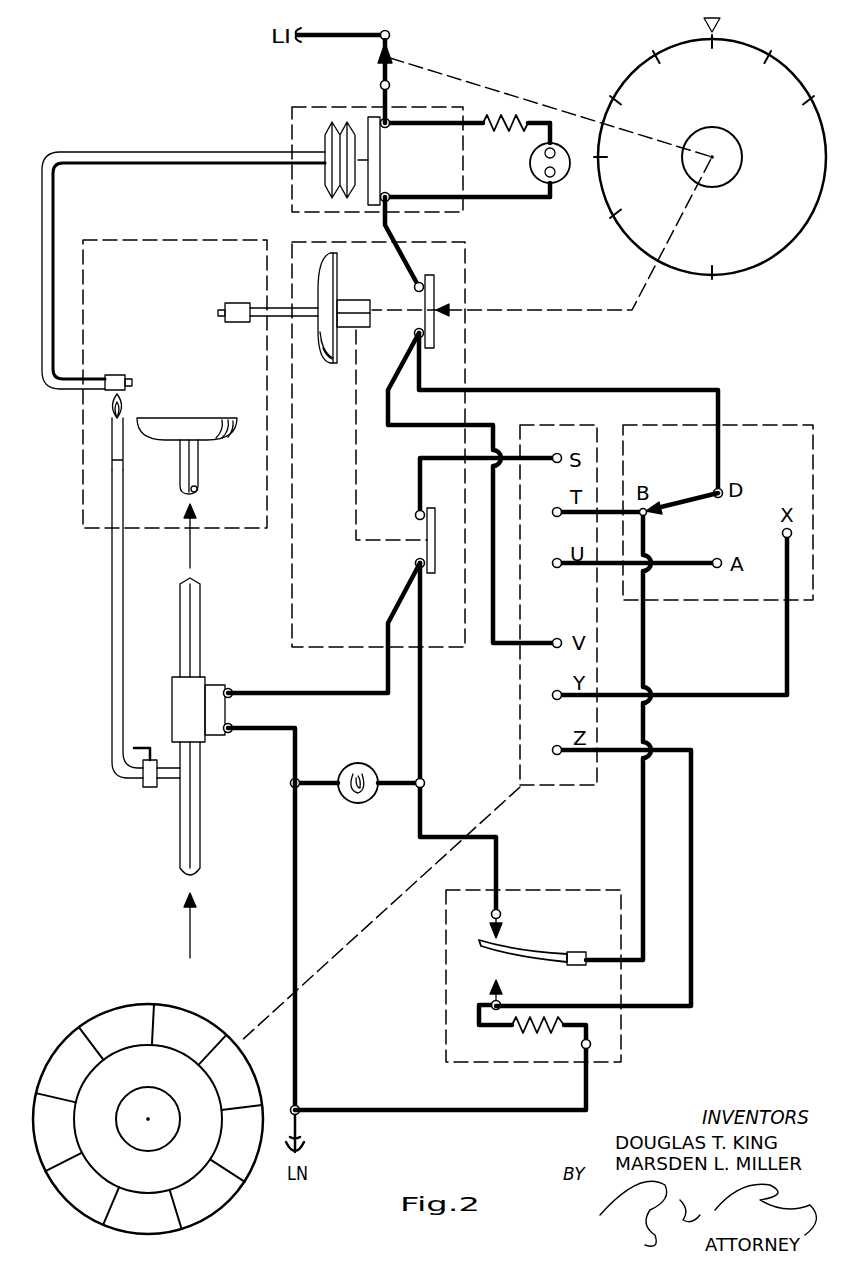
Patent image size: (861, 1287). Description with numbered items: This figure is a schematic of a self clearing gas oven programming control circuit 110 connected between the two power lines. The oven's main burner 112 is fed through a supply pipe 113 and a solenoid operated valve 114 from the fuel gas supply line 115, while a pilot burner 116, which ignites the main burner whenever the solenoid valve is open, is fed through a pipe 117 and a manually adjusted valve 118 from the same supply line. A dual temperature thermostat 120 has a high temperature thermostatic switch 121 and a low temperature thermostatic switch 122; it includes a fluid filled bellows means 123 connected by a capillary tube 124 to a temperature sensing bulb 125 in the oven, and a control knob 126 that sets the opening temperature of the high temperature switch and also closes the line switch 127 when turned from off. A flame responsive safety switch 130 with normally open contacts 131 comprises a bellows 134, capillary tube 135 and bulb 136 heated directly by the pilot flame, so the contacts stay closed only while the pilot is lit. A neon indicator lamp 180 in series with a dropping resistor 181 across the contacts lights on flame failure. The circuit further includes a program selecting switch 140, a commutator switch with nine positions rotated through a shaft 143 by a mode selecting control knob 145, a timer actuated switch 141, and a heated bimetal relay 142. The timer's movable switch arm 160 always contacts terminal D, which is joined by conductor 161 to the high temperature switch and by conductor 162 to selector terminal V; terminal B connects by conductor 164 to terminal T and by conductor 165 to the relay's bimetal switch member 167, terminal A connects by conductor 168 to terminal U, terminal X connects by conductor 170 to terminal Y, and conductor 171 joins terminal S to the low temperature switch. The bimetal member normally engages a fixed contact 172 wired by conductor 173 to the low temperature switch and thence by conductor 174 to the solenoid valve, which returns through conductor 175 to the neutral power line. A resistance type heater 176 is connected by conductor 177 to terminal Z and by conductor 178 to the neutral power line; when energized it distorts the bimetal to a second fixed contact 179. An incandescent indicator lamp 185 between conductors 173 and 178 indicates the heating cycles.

The self clearing control circuit 110 is at (716, 337).
The main burner 112 is at (193, 418).
The supply pipe 113 is at (203, 600).
The solenoid operated valve 114 is at (206, 682).
The fuel gas supply line 115 is at (203, 822).
The pilot burner 116 is at (126, 418).
The pipe 117 is at (110, 601).
The manually adjusted valve 118 is at (145, 788).
The dual temperature thermostat 120 is at (310, 238).
The high temperature thermostatic switch 121 is at (437, 327).
The low temperature thermostatic switch 122 is at (418, 556).
The fluid filled bellows means 123 is at (340, 274).
The capillary tube 124 is at (312, 322).
The temperature sensing bulb 125 is at (240, 303).
The control knob 126 is at (668, 48).
The line switch 127 is at (383, 64).
The flame responsive safety switch 130 is at (314, 102).
The normally open contacts 131 is at (381, 158).
The fluid filled bellows 134 is at (322, 138).
The capillary tube 135 is at (120, 152).
The bulb 136 is at (113, 375).
The program selecting switch 140 is at (512, 729).
The timer actuated switch 141 is at (755, 425).
The relay 142 is at (589, 890).
The shaft 143 is at (280, 1003).
The mode selecting control knob 145 is at (135, 1002).
The movable switch arm 160 is at (676, 503).
The conductor 161 is at (568, 389).
The conductor 162 is at (413, 430).
The conductor 164 is at (559, 517).
The conductor 165 is at (646, 645).
The bimetal switch member 167 is at (548, 950).
The conductor 168 is at (683, 562).
The conductor 170 is at (785, 659).
The conductor 171 is at (527, 458).
The fixed contact 172 is at (501, 914).
The conductor 173 is at (500, 863).
The conductor 174 is at (291, 691).
The conductor 175 is at (299, 882).
The resistance type heater 176 is at (524, 1030).
The conductor 177 is at (694, 866).
The conductor 178 is at (589, 1088).
The second fixed contact 179 is at (501, 1001).
The neon indicator lamp 180 is at (568, 182).
The dropping resistor 181 is at (504, 144).
The incandescent indicator lamp 185 is at (363, 765).